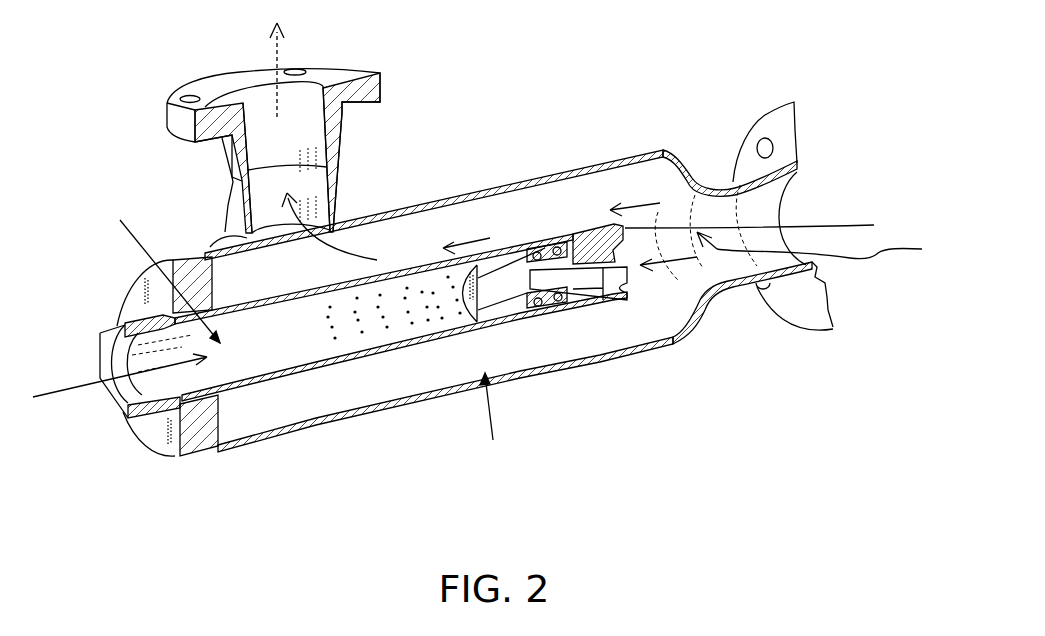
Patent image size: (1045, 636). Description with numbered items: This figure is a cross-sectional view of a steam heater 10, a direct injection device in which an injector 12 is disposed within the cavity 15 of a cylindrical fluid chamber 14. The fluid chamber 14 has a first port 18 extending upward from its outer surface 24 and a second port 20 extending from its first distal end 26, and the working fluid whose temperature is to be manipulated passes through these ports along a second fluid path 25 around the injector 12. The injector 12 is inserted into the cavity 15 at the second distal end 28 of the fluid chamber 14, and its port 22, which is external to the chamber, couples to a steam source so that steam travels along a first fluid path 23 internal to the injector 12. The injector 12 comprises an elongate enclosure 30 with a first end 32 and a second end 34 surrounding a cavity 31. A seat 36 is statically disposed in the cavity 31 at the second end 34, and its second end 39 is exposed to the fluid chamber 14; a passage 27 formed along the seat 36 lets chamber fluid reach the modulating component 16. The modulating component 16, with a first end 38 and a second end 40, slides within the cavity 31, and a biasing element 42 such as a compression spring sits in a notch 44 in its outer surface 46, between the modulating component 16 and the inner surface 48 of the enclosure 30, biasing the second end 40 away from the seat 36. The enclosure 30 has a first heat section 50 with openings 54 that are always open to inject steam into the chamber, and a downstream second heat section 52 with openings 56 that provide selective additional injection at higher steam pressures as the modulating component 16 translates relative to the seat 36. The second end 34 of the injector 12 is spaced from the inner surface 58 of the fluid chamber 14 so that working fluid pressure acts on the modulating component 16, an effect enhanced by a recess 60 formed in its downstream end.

The steam heater 10 is at (650, 107).
The injector 12 is at (280, 374).
The fluid chamber 14 is at (600, 357).
The cavity 15 is at (494, 421).
The modulating component 16 is at (500, 268).
The first port 18 is at (338, 122).
The second port 20 is at (800, 168).
The port 22 is at (110, 393).
The first fluid path 23 is at (85, 390).
The outer surface 24 is at (540, 213).
The second fluid path 25 is at (282, 44).
The first distal end 26 is at (628, 262).
The passage 27 is at (603, 275).
The second distal end 28 is at (200, 447).
The enclosure 30 is at (237, 383).
The cavity 31 is at (155, 272).
The first end 32 is at (147, 313).
The second end 34 is at (607, 222).
The seat 36 is at (587, 228).
The first end 38 is at (497, 262).
The second end 39 is at (625, 273).
The second end 40 is at (547, 273).
The biasing element 42 is at (530, 258).
The notch 44 is at (558, 248).
The outer surface 46 is at (480, 304).
The inner surface 48 is at (390, 275).
The first heat section 50 is at (387, 349).
The second heat section 52 is at (443, 282).
The openings 54 is at (353, 303).
The openings 56 is at (433, 288).
The inner surface 58 is at (650, 252).
The recess 60 is at (560, 270).